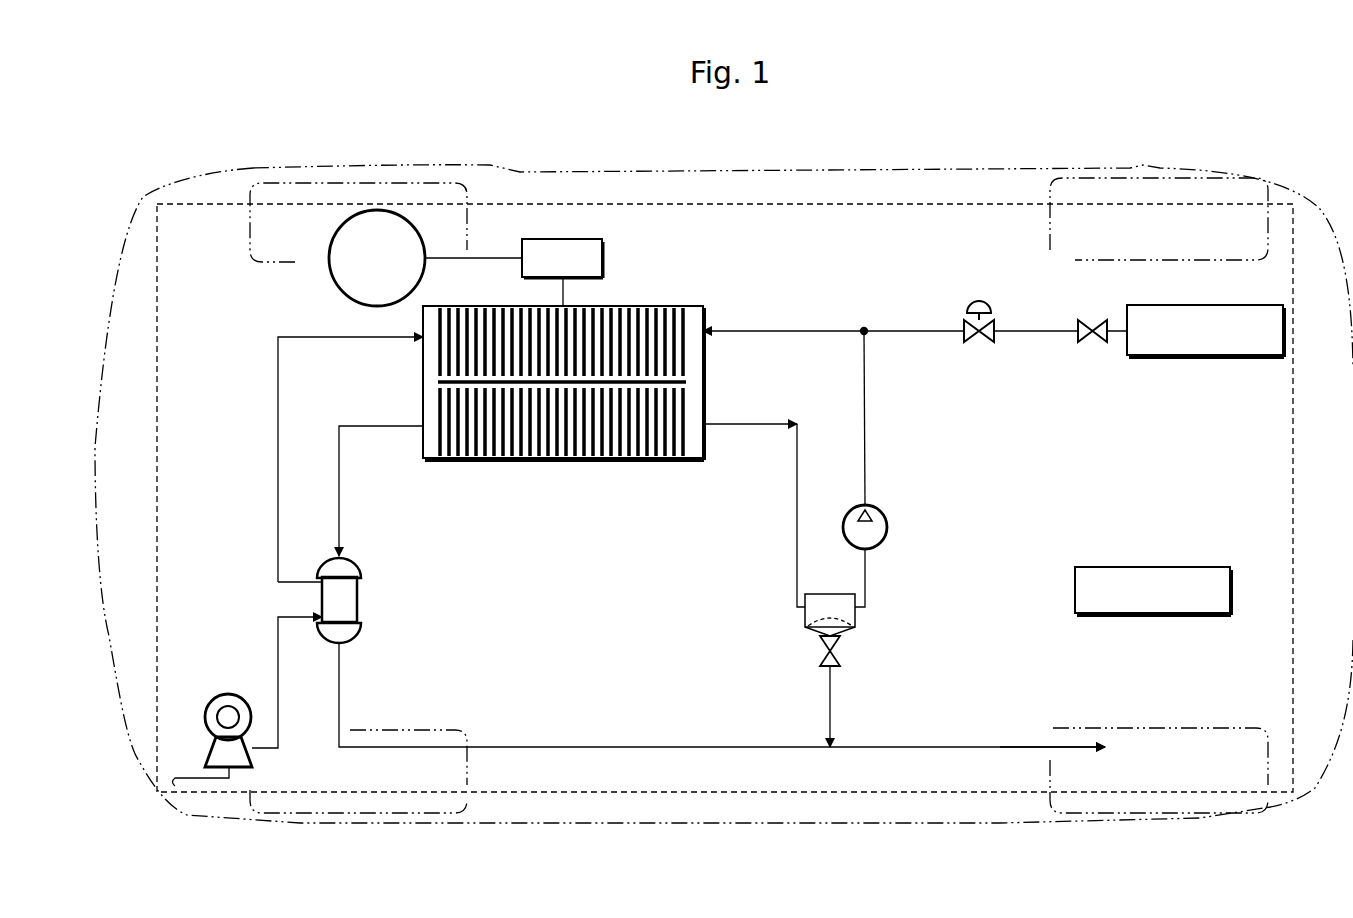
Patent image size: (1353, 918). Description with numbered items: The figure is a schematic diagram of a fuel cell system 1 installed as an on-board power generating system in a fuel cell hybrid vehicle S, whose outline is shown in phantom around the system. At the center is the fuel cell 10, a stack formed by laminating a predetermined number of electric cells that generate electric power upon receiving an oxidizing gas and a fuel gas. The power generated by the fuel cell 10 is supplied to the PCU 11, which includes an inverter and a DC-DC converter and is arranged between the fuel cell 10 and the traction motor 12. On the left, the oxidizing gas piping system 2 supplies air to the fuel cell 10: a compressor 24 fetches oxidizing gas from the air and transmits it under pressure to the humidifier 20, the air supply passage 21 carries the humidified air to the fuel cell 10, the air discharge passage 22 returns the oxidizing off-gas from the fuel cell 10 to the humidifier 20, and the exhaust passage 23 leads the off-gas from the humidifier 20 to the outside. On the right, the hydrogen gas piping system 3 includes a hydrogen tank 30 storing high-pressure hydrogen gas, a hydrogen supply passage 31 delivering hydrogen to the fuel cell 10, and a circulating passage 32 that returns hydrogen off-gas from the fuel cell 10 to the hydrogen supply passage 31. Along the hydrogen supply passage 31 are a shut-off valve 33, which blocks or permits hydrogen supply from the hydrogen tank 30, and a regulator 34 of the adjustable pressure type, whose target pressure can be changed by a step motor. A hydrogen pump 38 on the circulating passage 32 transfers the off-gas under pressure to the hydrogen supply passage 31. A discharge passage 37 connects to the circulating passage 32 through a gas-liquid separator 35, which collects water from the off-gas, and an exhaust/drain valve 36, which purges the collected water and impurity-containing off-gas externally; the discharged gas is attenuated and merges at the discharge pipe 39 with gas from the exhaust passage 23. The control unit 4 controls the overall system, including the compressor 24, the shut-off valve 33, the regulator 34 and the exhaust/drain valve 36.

The fuel cell hybrid vehicle S is at (948, 164).
The fuel cell system 1 is at (545, 203).
The oxidizing gas piping system 2 is at (639, 561).
The hydrogen gas piping system 3 is at (816, 539).
The control unit 4 is at (1152, 567).
The fuel cell 10 is at (652, 457).
The PCU (Power Control Unit) 11 is at (603, 258).
The traction motor 12 is at (329, 265).
The humidifier 20 is at (358, 610).
The air supply passage 21 is at (278, 534).
The air discharge passage 22 is at (340, 524).
The exhaust passage 23 is at (737, 747).
The compressor 24 is at (236, 699).
The hydrogen tank 30 is at (1235, 305).
The hydrogen supply passage 31 is at (750, 331).
The circulating passage 32 is at (796, 560).
The shut-off valve 33 is at (1087, 320).
The regulator 34 is at (979, 301).
The gas-liquid separator 35 is at (812, 594).
The exhaust/drain valve 36 is at (822, 654).
The discharge passage 37 is at (831, 702).
The hydrogen pump 38 is at (878, 512).
The discharge pipe 39 is at (930, 747).